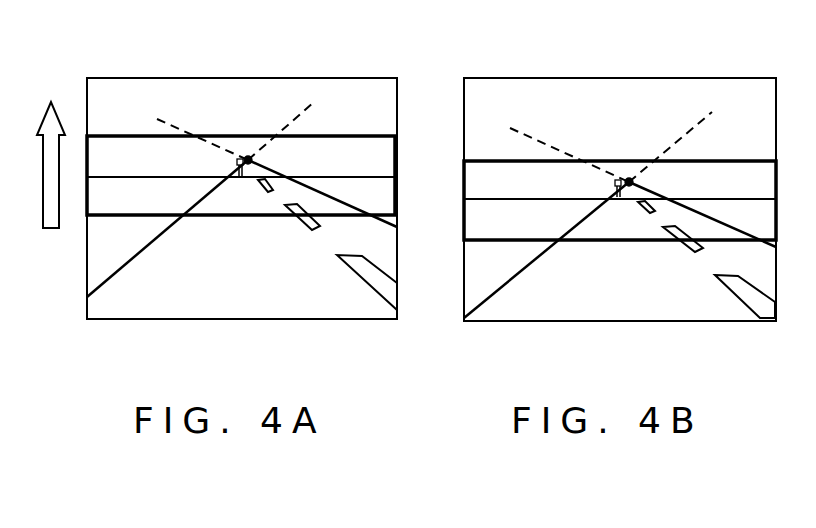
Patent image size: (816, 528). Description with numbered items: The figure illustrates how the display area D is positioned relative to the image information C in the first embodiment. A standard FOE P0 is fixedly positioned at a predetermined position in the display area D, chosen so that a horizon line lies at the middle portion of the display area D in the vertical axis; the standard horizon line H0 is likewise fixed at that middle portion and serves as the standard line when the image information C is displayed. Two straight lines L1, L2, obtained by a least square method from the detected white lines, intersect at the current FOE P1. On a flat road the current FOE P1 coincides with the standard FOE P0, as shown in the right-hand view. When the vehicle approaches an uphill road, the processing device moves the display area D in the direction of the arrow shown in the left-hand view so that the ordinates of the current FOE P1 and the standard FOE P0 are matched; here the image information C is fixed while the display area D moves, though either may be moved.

In FIG. 4A, the current FOE P1 is at (247, 159).
In FIG. 4B, the current FOE P1 is at (628, 179).
In FIG. 4A, the standard FOE P0 is at (243, 160).
In FIG. 4B, the standard FOE P0 is at (635, 182).
In FIG. 4A, the straight line L1 is at (333, 198).
In FIG. 4B, the straight line L1 is at (721, 222).
In FIG. 4A, the straight line L2 is at (143, 249).
In FIG. 4B, the straight line L2 is at (528, 265).
In FIG. 4A, the display area D is at (117, 217).
In FIG. 4B, the display area D is at (741, 161).
In FIG. 4A, the image information C is at (255, 320).
In FIG. 4B, the image information C is at (730, 78).
In FIG. 4A, the standard horizon line H0 is at (135, 527).